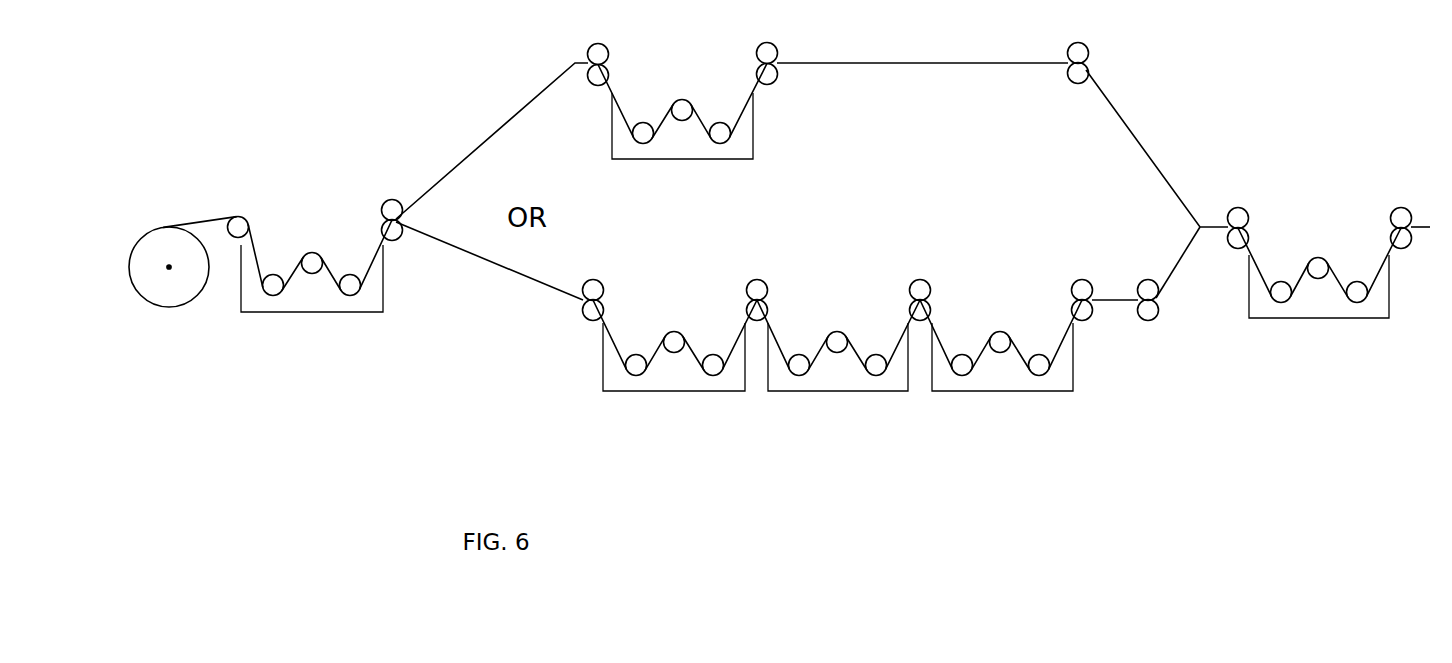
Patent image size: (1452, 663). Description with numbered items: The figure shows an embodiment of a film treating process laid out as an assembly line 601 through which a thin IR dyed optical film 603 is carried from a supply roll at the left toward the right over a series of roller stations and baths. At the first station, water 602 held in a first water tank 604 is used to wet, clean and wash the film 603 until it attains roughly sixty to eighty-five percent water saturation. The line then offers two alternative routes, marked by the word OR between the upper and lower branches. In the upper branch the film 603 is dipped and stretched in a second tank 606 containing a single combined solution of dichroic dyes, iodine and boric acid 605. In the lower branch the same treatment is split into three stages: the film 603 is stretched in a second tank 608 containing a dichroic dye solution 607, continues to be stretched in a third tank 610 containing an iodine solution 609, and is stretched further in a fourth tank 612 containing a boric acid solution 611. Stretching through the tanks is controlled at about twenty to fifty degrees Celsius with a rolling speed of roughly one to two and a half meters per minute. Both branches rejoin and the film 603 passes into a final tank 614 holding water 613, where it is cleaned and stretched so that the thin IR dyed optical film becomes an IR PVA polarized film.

The assembly line 601 is at (204, 169).
The water 602 is at (255, 302).
The film 603 is at (170, 306).
The first water tank 604 is at (312, 313).
The solution of dichroic dyes, iodine and boric acid 605 is at (627, 145).
The second tank 606 is at (682, 160).
The dichroic solution 607 is at (623, 377).
The second tank 608 is at (674, 392).
The iodine solution 609 is at (783, 380).
The third tank 610 is at (837, 392).
The boric acid solution 611 is at (945, 380).
The fourth tank 612 is at (1000, 392).
The water 613 is at (1264, 307).
The final tank 614 is at (1320, 320).